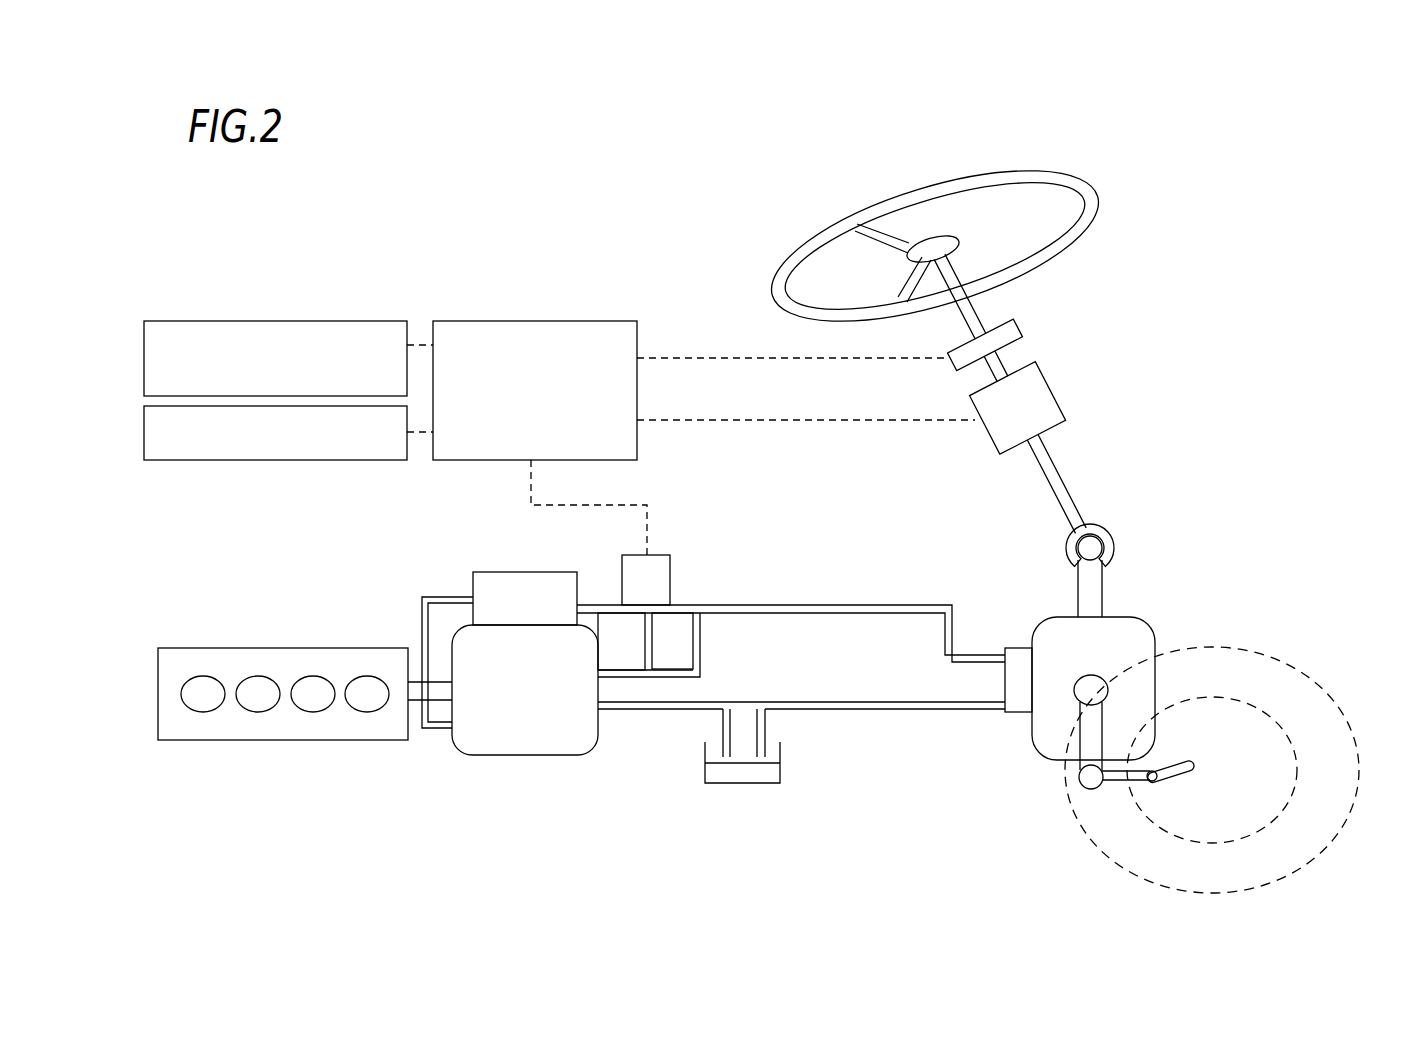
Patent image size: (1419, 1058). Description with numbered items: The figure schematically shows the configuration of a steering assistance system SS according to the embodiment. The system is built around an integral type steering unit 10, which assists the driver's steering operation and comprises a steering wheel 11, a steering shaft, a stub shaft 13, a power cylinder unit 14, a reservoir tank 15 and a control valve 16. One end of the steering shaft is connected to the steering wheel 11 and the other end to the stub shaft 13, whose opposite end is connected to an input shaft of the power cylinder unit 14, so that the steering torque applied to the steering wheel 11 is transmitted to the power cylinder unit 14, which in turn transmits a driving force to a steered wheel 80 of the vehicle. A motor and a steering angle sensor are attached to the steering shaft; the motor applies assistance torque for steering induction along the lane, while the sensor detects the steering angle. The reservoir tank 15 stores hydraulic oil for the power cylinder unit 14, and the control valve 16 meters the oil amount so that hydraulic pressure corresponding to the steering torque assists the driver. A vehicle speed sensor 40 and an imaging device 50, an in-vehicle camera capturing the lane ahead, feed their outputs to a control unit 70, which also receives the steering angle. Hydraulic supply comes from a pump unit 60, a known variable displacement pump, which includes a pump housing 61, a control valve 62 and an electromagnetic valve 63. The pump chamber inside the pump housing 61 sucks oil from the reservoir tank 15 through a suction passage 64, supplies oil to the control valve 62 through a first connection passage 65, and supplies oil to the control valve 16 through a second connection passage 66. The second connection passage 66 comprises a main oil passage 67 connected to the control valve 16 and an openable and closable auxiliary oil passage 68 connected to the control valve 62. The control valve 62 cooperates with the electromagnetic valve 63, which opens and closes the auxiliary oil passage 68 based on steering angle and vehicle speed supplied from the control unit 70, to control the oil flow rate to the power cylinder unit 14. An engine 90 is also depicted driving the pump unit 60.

The steering assistance system SS is at (503, 116).
The integral type steering unit 10 is at (1142, 133).
The steering wheel 11 is at (1012, 172).
The stub shaft 13 is at (1105, 590).
The power cylinder unit 14 is at (1160, 646).
The reservoir tank 15 is at (790, 775).
The control valve 16 is at (1018, 648).
The vehicle speed sensor 40 is at (337, 322).
The imaging device 50 is at (337, 460).
The pump unit 60 is at (484, 546).
The pump housing 61 is at (562, 758).
The control valve 62 is at (548, 572).
The electromagnetic valve 63 is at (656, 556).
The suction passage 64 is at (627, 706).
The first connection passage 65 is at (434, 596).
The second connection passage 66 is at (808, 583).
The main oil passage 67 is at (700, 633).
The auxiliary oil passage 68 is at (588, 614).
The control unit 70 is at (612, 322).
The steered wheel 80 is at (1268, 659).
The engine 90 is at (346, 648).